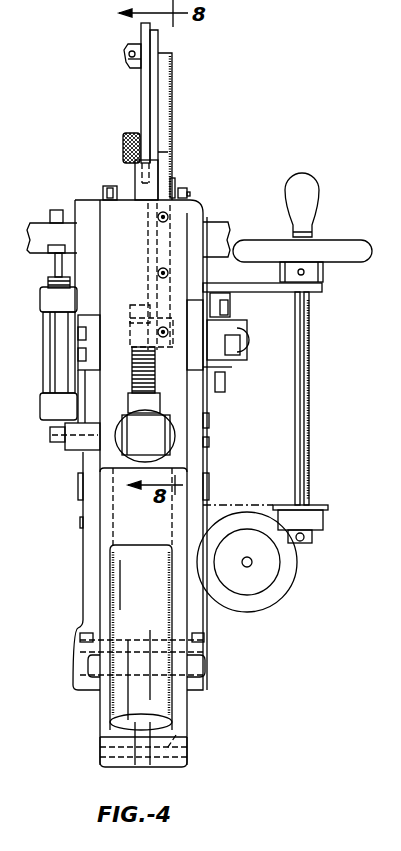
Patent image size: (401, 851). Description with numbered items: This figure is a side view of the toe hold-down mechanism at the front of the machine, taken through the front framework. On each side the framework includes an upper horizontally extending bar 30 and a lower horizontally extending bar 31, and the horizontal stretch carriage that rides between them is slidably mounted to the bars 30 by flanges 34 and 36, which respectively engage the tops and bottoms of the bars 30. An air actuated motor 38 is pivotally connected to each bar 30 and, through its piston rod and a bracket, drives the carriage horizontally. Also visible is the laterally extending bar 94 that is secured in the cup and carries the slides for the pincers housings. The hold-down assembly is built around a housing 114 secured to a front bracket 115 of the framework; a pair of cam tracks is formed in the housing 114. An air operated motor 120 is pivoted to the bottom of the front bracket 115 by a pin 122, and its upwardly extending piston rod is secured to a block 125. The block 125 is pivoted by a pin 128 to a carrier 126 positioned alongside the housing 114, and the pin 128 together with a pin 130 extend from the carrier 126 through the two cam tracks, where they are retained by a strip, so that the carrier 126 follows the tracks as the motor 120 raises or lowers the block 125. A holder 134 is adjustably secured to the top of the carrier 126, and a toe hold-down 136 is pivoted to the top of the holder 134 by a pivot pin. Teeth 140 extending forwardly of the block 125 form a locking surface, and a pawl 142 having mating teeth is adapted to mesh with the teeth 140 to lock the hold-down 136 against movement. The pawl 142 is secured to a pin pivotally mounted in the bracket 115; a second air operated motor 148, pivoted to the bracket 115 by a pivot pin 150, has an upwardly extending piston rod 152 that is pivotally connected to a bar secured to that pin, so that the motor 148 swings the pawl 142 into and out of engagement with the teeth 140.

The upper horizontally extending bar 30 is at (92, 350).
The lower horizontally extending bar 31 is at (208, 432).
The flange 34 is at (228, 298).
The flange 36 is at (218, 387).
The air actuated motor 38 is at (246, 330).
The bar 94 is at (218, 225).
The housing 114 is at (165, 136).
The front bracket 115 is at (105, 215).
The air operated motor 120 is at (148, 602).
The pin 122 is at (190, 733).
The block 125 is at (135, 345).
The carrier 126 is at (153, 85).
The pin 128 is at (138, 307).
The pin 130 is at (155, 222).
The holder 134 is at (143, 107).
The toe hold-down 136 is at (125, 68).
The teeth 140 is at (157, 383).
The pawl 142 is at (120, 178).
The air operated motor 148 is at (48, 333).
The pivot pin 150 is at (50, 440).
The piston rod 152 is at (55, 265).